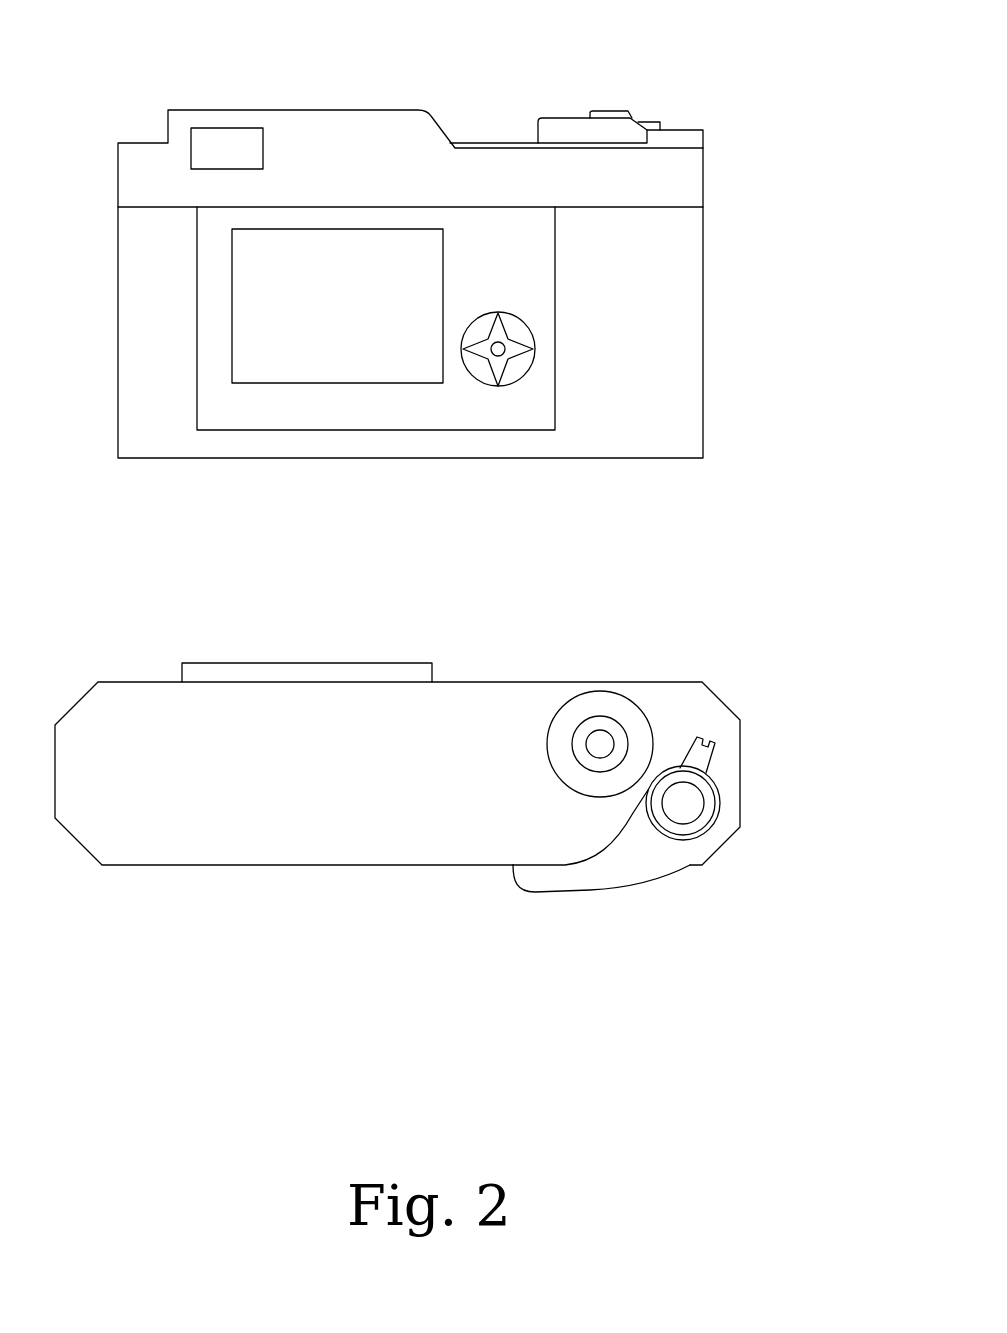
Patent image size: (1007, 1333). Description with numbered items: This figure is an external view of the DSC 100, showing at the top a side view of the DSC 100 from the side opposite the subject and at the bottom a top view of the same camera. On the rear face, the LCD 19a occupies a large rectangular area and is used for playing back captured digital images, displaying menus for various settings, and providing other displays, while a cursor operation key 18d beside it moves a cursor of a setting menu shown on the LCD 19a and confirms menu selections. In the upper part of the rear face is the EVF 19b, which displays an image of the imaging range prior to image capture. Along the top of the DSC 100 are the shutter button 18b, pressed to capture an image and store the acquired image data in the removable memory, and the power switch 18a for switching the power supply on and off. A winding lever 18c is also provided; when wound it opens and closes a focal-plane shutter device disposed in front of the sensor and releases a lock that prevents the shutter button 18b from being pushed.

The DSC 100 is at (313, 110).
The power switch 18a is at (657, 125).
The shutter button 18b is at (612, 115).
The winding lever 18c is at (633, 128).
The cursor operation key 18d is at (518, 385).
The LCD 19a is at (312, 363).
The EVF 19b is at (215, 133).